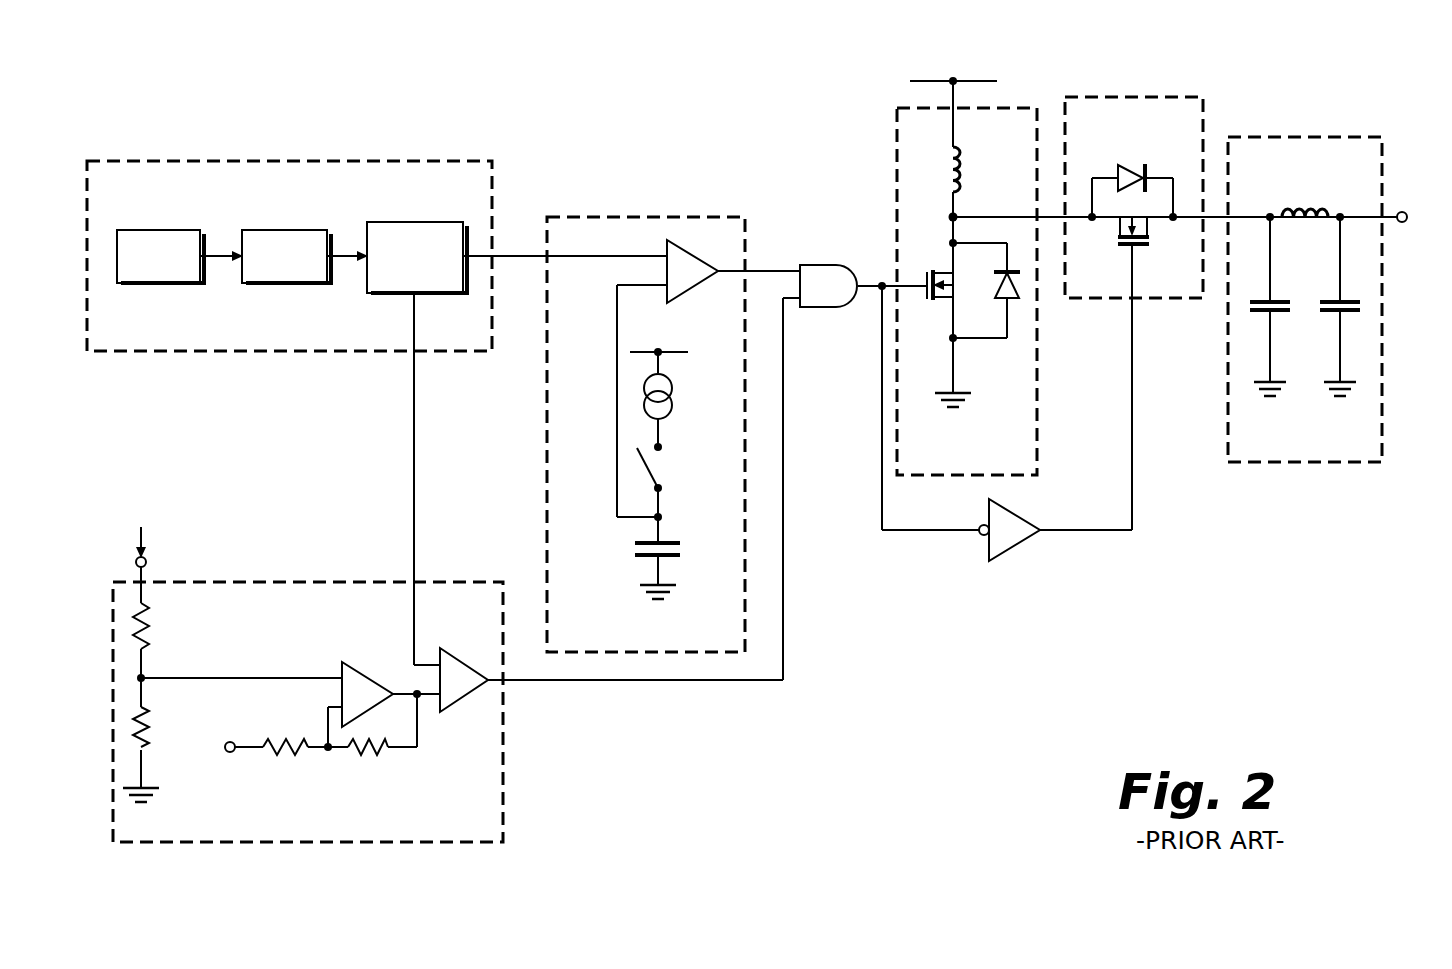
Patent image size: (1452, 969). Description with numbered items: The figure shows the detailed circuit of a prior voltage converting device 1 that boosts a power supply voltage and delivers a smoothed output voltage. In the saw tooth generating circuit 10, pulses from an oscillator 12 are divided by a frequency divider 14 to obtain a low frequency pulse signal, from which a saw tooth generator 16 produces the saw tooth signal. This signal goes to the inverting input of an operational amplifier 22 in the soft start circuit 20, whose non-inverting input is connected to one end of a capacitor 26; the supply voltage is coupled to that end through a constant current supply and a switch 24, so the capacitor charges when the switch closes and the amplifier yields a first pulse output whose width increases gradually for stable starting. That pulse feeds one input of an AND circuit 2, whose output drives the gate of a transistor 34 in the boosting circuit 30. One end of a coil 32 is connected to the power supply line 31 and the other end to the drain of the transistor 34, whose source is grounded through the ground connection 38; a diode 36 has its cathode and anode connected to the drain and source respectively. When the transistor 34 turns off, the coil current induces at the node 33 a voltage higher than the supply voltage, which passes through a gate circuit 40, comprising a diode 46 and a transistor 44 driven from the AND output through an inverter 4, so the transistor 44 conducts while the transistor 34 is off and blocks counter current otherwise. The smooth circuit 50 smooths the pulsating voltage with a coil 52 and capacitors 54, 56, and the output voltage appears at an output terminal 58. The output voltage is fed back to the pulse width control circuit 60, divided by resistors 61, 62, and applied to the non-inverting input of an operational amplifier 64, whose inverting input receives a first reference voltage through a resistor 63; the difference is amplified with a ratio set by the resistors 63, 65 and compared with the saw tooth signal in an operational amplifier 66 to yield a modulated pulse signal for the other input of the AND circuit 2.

The voltage converting device 1 is at (835, 745).
The AND circuit 2 is at (820, 307).
The inverter 4 is at (990, 552).
The saw tooth generating circuit 10 is at (373, 161).
The oscillator 12 is at (158, 230).
The frequency divider 14 is at (275, 230).
The saw tooth generator 16 is at (382, 293).
The soft start circuit 20 is at (648, 216).
The operational amplifier 22 is at (680, 243).
The switch 24 is at (661, 448).
The capacitor 26 is at (633, 543).
The boosting circuit 30 is at (893, 200).
The power supply line 31 is at (988, 82).
The coil 32 is at (952, 168).
The node 33 is at (958, 213).
The transistor 34 is at (932, 302).
The diode 36 is at (992, 279).
The ground 38 is at (967, 397).
The gate circuit 40 is at (1133, 97).
The transistor 44 is at (1118, 247).
The diode 46 is at (1127, 165).
The smooth circuit 50 is at (1275, 137).
The coil 52 is at (1305, 205).
The capacitor 54 is at (1280, 293).
The capacitor 56 is at (1333, 317).
The output terminal 58 is at (1403, 228).
The pulse width control circuit 60 is at (258, 582).
The voltage dividing resistor 61 is at (148, 635).
The voltage dividing resistor 62 is at (146, 748).
The resistor 63 is at (280, 740).
The operational amplifier 64 is at (355, 662).
The resistor 65 is at (385, 752).
The operational amplifier 66 is at (443, 652).